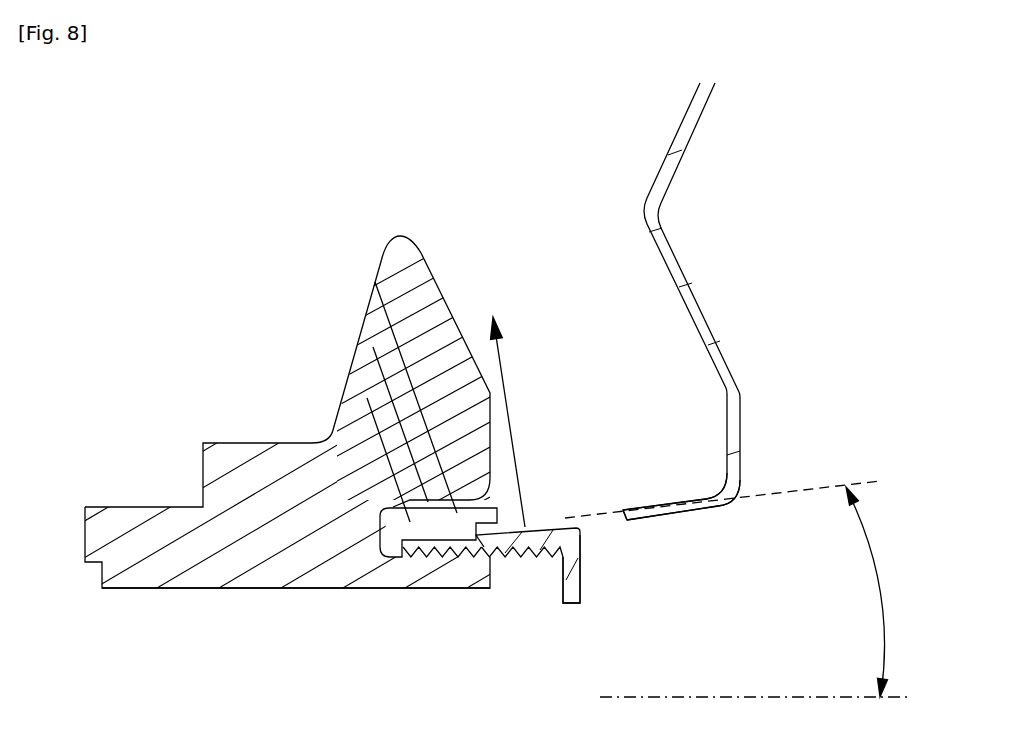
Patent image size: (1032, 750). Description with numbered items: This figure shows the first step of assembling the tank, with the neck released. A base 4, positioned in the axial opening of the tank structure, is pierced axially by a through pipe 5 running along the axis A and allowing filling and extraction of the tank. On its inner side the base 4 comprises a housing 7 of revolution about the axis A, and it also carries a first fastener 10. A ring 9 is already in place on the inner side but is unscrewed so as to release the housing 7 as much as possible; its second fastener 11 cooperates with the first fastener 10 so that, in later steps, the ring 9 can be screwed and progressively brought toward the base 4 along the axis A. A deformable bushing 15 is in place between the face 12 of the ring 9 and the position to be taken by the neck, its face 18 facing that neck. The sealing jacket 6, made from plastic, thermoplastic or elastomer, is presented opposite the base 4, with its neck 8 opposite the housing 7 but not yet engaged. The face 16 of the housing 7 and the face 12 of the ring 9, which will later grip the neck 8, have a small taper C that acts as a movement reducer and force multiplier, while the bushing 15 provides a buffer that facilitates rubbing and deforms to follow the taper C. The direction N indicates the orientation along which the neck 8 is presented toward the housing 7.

The base 4 is at (145, 515).
The through pipe 5 is at (133, 587).
The sealing jacket 6 is at (653, 187).
The housing 7 is at (375, 282).
The neck 8 is at (660, 513).
The ring 9 is at (580, 602).
The first fastener 10 is at (455, 547).
The second fastener 11 is at (518, 555).
The face of the ring 12 is at (533, 527).
The deformable bushing 15 is at (413, 532).
The face of the housing 16 is at (373, 347).
The face of the bushing 18 is at (367, 398).
The normal direction N is at (508, 420).
The axis A is at (690, 697).
The taper C is at (743, 589).